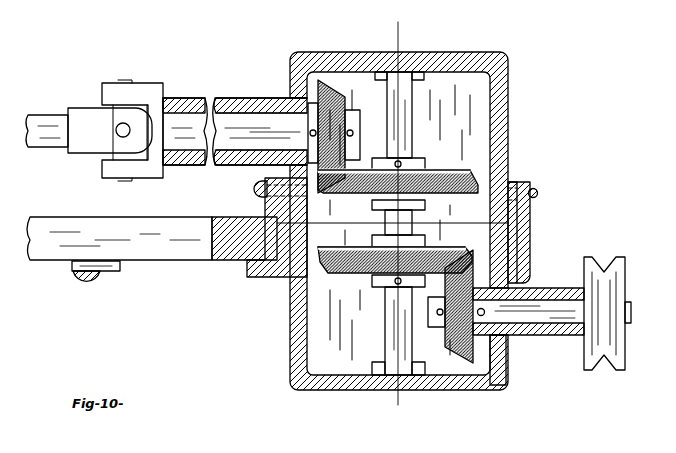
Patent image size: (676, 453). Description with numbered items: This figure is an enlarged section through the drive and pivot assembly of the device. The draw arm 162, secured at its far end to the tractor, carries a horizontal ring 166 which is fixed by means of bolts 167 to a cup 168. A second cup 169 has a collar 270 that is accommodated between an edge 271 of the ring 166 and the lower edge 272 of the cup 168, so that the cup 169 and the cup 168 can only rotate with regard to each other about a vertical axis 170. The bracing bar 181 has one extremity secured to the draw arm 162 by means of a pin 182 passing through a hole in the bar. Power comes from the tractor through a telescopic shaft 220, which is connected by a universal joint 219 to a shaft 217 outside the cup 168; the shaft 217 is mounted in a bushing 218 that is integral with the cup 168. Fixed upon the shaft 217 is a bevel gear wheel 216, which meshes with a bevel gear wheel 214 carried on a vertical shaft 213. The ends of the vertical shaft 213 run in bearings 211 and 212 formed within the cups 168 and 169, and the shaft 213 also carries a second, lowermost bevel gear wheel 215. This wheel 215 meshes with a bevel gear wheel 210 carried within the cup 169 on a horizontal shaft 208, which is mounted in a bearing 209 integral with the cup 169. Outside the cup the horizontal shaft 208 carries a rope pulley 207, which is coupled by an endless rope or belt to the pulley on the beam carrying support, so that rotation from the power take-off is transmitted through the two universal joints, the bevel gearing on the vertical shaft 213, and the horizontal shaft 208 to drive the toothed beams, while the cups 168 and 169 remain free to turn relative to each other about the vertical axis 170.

The draw arm 162 is at (102, 220).
The horizontal ring 166 is at (232, 262).
The bolts 167 is at (256, 189).
The cup 168 is at (505, 44).
The second cup 169 is at (489, 390).
The vertical axis 170 is at (397, 33).
The bracing bar 181 is at (112, 270).
The pin 182 is at (95, 286).
The rope pulley 207 is at (605, 265).
The horizontal shaft 208 is at (565, 325).
The bearing 209 is at (536, 330).
The bevel gear wheel 210 is at (458, 368).
The bearing 211 is at (406, 74).
The bearing 212 is at (390, 390).
The vertical shaft 213 is at (425, 108).
The bevel gear wheel 214 is at (430, 197).
The bevel gear wheel 215 is at (430, 246).
The bevel gear wheel 216 is at (327, 85).
The shaft 217 is at (186, 114).
The bushing 218 is at (244, 99).
The universal joint 219 is at (127, 101).
The telescopic shaft 220 is at (50, 112).
The collar 270 is at (522, 247).
The edge 271 is at (276, 284).
The lower edge 272 is at (303, 204).